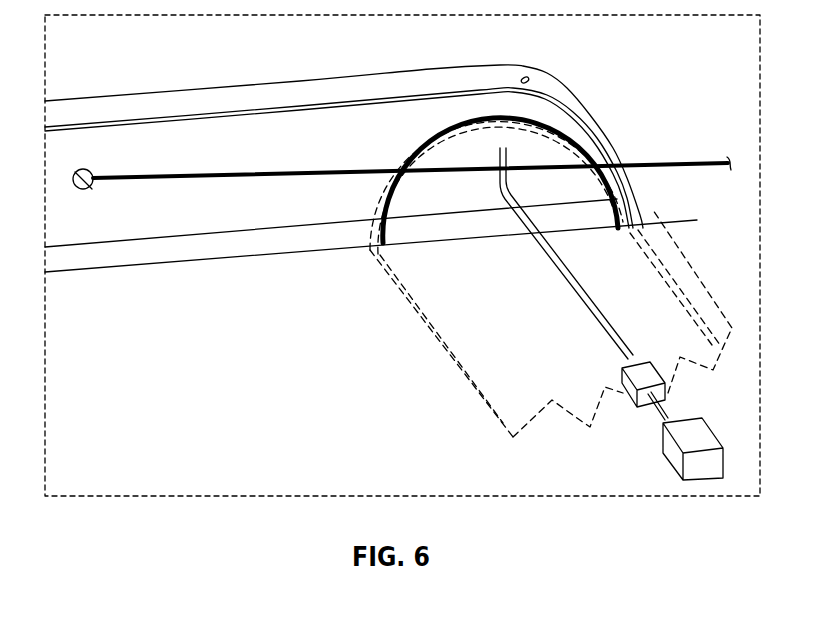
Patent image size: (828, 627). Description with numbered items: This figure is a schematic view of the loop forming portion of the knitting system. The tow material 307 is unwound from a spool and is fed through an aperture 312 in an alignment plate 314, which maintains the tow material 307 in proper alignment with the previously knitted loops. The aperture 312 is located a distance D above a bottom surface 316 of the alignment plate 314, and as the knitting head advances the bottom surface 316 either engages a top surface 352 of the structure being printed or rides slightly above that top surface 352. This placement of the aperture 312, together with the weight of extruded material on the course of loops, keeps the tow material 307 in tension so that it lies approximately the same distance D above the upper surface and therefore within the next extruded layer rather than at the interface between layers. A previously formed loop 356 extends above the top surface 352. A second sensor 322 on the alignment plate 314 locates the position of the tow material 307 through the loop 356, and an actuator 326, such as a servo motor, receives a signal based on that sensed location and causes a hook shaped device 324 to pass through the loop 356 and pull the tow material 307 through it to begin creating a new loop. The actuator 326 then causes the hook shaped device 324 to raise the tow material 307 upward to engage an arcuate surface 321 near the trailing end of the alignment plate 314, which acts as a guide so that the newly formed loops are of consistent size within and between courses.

The tow material 307 is at (668, 170).
The aperture 312 is at (87, 189).
The alignment plate 314 is at (215, 102).
The bottom surface 316 is at (123, 270).
The arcuate surface 321 is at (547, 110).
The second sensor 322 is at (619, 137).
The hook shaped device 324 is at (612, 338).
The actuator 326 is at (675, 455).
The top surface 352 is at (277, 245).
The previously formed loop 356 is at (397, 200).